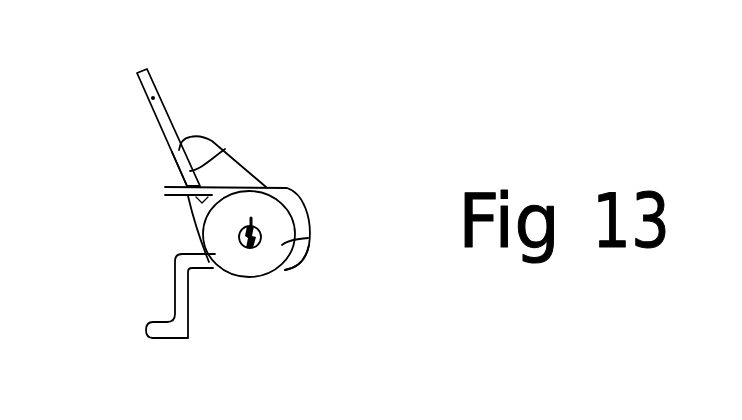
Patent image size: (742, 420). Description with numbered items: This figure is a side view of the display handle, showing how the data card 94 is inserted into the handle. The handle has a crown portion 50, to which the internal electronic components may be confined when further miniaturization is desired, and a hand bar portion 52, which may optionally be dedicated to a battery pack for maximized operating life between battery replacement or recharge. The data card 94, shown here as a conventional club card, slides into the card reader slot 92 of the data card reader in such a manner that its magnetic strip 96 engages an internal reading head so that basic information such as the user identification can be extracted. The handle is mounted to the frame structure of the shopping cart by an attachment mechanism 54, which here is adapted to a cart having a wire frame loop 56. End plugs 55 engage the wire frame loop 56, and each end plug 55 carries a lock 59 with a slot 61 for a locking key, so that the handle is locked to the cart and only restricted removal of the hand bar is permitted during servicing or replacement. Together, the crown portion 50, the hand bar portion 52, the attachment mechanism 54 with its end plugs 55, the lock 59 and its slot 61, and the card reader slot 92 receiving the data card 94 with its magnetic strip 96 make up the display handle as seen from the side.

The crown portion 50 is at (188, 138).
The hand bar portion 52 is at (285, 270).
The attachment mechanism 54 is at (262, 276).
The end plugs 55 is at (298, 262).
The wire frame loop 56 is at (182, 275).
The lock 59 is at (260, 230).
The slot 61 is at (240, 232).
The card reader slot 92 is at (225, 149).
The data card 94 is at (154, 98).
The magnetic strip 96 is at (180, 167).